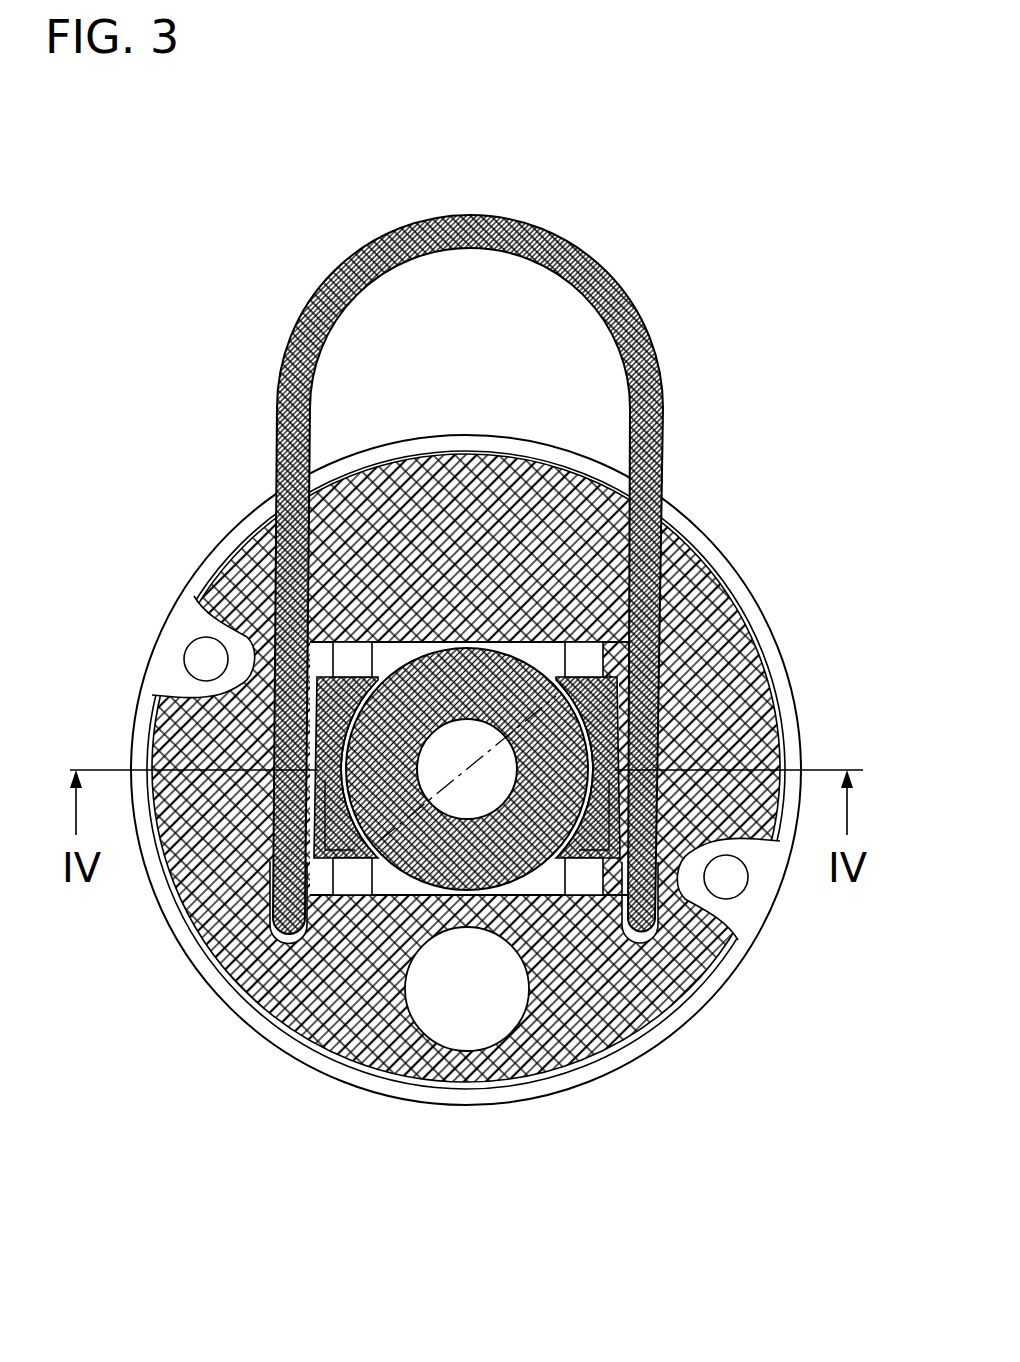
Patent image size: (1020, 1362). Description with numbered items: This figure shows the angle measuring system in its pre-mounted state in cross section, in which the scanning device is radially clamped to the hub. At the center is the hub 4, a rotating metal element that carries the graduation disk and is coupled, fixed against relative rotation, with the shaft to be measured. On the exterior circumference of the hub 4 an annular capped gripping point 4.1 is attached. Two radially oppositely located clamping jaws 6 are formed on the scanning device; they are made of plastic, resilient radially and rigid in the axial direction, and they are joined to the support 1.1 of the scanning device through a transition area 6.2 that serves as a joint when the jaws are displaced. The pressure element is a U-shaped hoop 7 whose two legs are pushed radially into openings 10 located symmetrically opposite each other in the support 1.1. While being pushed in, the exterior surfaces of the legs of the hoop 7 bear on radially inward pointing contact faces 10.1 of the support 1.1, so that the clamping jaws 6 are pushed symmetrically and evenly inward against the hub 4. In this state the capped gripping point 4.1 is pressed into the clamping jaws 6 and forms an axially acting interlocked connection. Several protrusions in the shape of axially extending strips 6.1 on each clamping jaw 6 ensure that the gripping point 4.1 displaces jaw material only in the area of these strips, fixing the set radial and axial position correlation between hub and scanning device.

The support 1.1 is at (715, 610).
The hub 4 is at (400, 900).
The annular capped gripping point 4.1 is at (345, 915).
The clamping jaws 6 is at (345, 733).
The axially extending strips 6.1 is at (385, 668).
The transition area 6.2 is at (605, 615).
The U-shaped hoop 7 is at (617, 284).
The openings 10 is at (277, 937).
The contact faces 10.1 is at (268, 868).